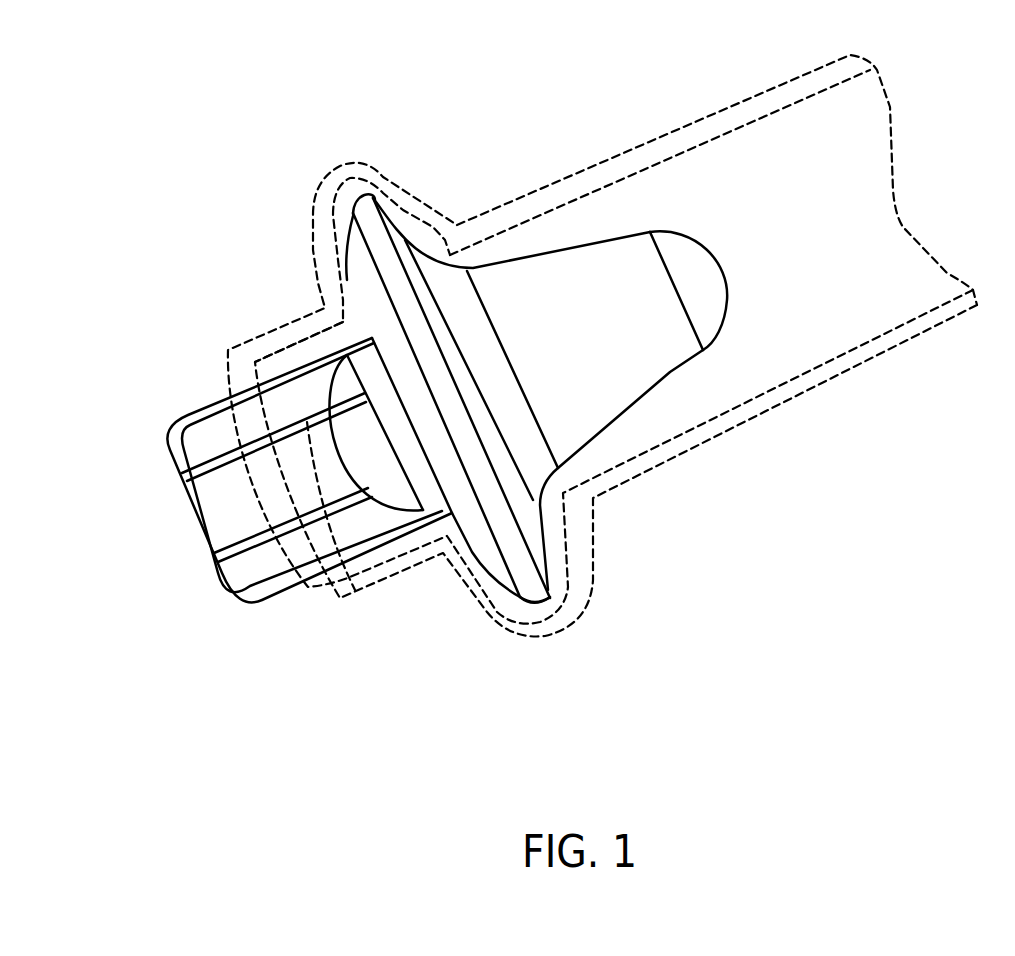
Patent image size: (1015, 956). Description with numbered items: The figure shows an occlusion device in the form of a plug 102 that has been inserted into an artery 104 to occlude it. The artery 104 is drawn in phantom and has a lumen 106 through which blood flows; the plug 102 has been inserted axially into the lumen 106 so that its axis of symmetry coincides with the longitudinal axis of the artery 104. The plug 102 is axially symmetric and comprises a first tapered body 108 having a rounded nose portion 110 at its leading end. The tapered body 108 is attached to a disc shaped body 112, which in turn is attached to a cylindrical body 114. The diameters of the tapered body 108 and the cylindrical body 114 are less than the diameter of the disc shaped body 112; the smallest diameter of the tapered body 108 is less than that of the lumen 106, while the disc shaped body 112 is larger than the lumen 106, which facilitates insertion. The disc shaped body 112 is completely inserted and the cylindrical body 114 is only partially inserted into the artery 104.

The plug 102 is at (262, 618).
The artery 104 is at (684, 127).
The lumen 106 is at (323, 333).
The first tapered body 108 is at (677, 370).
The rounded nose portion 110 is at (714, 250).
The disc shaped body 112 is at (548, 596).
The cylindrical body 114 is at (197, 410).